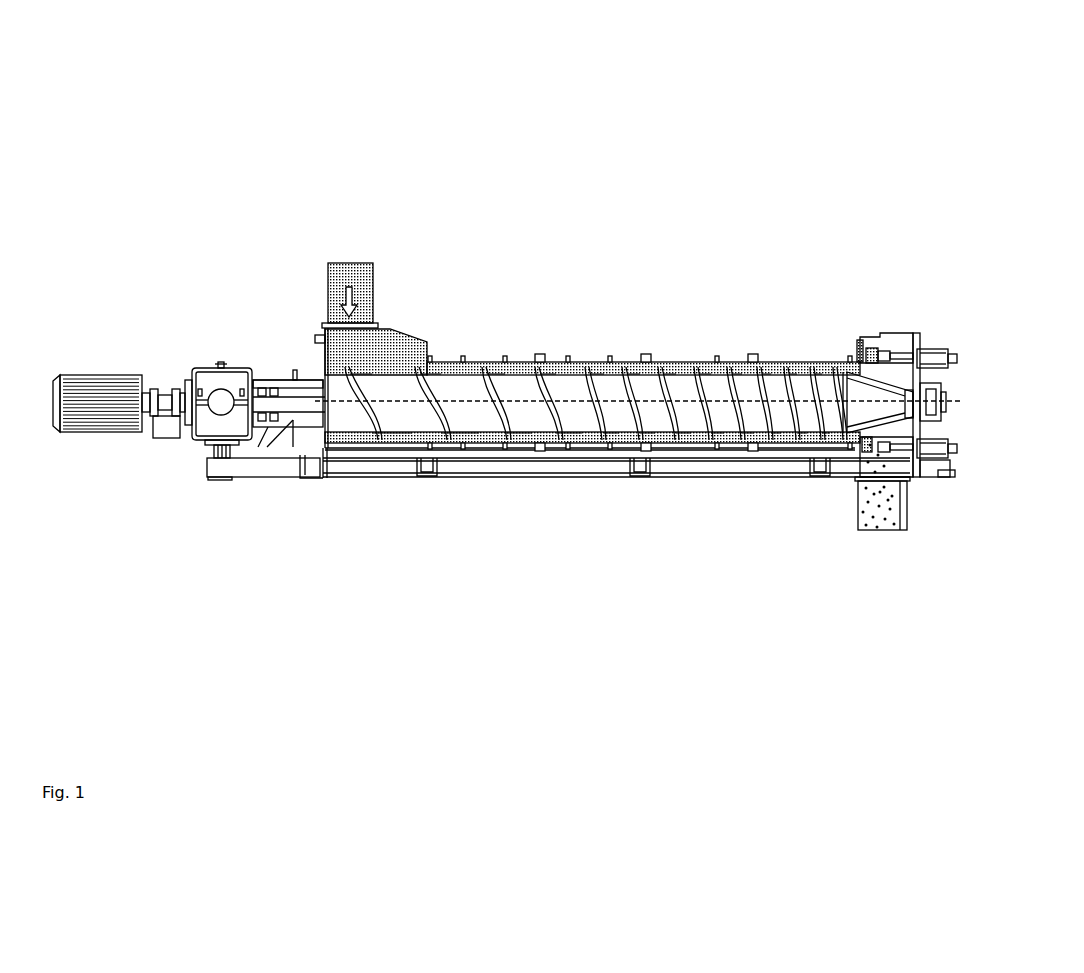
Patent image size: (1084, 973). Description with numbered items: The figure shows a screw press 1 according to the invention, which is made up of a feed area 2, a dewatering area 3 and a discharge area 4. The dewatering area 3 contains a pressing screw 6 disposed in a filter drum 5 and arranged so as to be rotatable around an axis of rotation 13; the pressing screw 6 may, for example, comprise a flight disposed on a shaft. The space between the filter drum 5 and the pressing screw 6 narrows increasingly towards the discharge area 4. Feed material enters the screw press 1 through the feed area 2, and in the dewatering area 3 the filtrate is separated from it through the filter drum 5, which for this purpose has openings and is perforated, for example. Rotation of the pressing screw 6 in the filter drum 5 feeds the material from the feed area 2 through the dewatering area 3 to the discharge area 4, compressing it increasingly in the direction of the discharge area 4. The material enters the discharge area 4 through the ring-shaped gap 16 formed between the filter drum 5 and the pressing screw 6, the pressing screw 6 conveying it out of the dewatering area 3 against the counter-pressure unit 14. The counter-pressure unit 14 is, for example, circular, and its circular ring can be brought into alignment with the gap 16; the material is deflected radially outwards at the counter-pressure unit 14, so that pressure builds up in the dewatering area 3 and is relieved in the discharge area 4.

The screw press 1 is at (317, 553).
The feed area 2 is at (350, 250).
The dewatering area 3 is at (535, 500).
The discharge area 4 is at (873, 340).
The filter drum 5 is at (663, 437).
The pressing screw 6 is at (735, 378).
The axis of rotation 13 is at (468, 400).
The counter-pressure unit 14 is at (895, 358).
The ring-shaped gap 16 is at (860, 442).